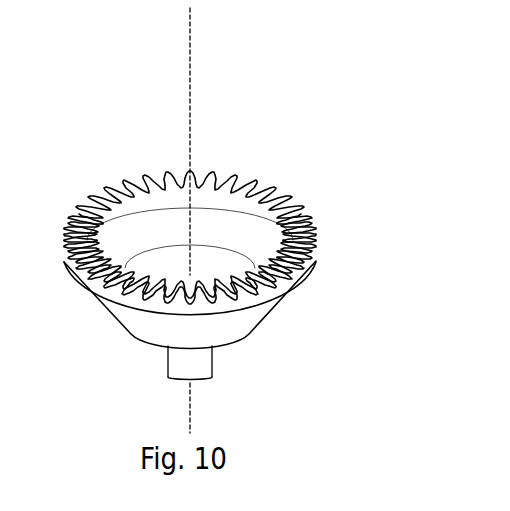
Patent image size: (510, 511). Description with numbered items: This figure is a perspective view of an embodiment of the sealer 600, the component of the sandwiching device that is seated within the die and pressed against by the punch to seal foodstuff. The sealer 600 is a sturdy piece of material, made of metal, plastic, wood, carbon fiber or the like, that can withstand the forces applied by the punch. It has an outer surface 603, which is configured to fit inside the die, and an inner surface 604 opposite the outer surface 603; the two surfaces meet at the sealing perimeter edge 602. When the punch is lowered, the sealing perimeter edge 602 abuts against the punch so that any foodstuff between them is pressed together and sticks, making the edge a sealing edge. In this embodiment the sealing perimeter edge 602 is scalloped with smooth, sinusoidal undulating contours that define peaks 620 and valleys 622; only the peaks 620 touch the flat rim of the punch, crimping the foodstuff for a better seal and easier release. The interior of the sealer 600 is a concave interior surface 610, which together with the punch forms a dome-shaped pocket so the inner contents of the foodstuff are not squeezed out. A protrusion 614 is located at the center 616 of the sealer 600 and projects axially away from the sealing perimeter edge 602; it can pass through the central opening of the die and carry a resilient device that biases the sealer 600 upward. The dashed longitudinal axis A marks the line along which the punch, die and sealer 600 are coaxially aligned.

The sealer 600 is at (107, 101).
The sealing perimeter edge 602 is at (226, 185).
The outer surface 603 is at (260, 318).
The inner surface 604 is at (111, 231).
The concave interior surface 610 is at (200, 258).
The protrusion 614 is at (176, 360).
The center 616 is at (195, 381).
The peaks 620 is at (160, 182).
The valleys 622 is at (190, 182).
The longitudinal axis A is at (190, 47).